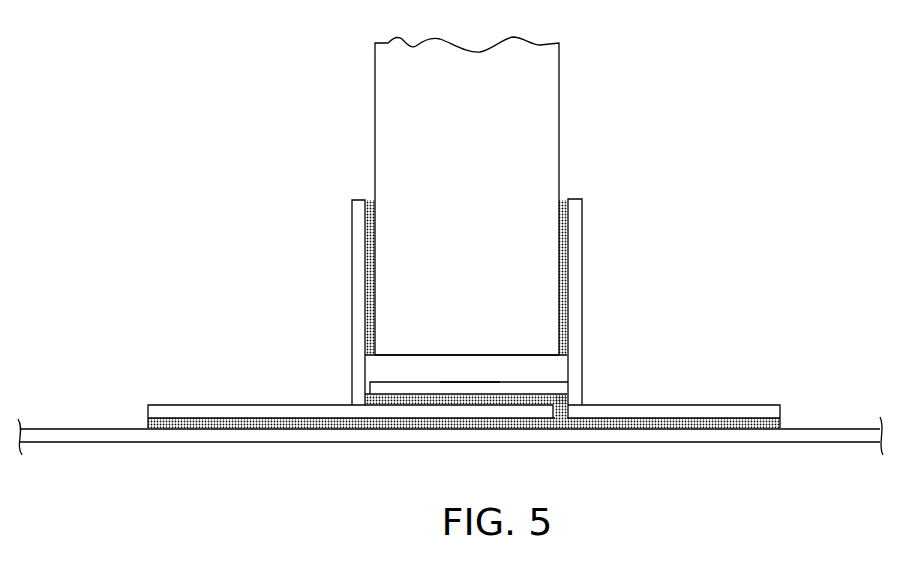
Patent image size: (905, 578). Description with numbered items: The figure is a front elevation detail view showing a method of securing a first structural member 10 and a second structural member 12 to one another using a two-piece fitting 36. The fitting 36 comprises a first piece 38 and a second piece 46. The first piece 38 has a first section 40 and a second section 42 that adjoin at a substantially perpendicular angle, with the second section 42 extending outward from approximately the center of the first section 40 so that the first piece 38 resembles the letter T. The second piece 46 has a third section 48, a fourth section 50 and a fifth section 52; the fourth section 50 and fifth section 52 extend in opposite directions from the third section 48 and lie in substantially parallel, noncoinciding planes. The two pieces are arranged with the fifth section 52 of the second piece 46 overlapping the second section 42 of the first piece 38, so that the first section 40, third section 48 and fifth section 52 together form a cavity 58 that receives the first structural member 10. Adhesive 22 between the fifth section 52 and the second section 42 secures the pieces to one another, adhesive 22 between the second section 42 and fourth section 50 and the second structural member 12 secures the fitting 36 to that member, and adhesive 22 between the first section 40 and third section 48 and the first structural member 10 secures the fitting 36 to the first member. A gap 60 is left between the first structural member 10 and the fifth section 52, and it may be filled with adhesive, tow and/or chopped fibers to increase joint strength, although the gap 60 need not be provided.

The first structural member 10 is at (445, 212).
The second structural member 12 is at (833, 430).
The adhesive 22 is at (372, 197).
The two-piece fitting 36 is at (464, 338).
The first piece 38 is at (360, 305).
The first section 40 is at (360, 242).
The second section 42 is at (393, 410).
The second piece 46 is at (572, 240).
The third section 48 is at (572, 305).
The fourth section 50 is at (715, 412).
The fifth section 52 is at (478, 383).
The cavity 58 is at (377, 365).
The gap 60 is at (547, 365).